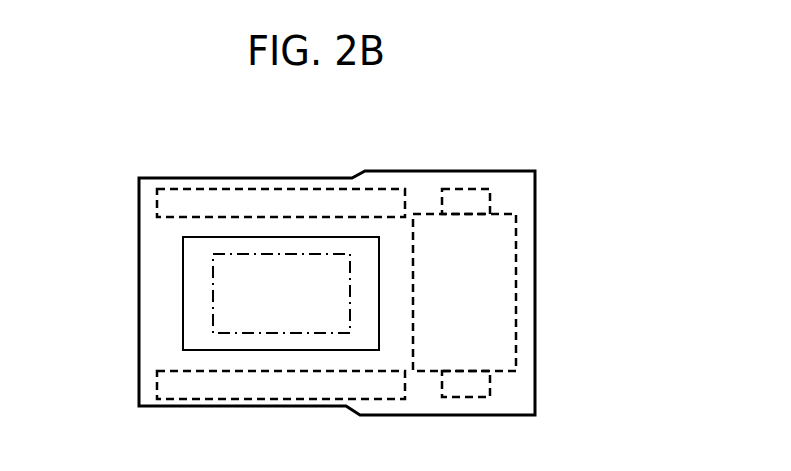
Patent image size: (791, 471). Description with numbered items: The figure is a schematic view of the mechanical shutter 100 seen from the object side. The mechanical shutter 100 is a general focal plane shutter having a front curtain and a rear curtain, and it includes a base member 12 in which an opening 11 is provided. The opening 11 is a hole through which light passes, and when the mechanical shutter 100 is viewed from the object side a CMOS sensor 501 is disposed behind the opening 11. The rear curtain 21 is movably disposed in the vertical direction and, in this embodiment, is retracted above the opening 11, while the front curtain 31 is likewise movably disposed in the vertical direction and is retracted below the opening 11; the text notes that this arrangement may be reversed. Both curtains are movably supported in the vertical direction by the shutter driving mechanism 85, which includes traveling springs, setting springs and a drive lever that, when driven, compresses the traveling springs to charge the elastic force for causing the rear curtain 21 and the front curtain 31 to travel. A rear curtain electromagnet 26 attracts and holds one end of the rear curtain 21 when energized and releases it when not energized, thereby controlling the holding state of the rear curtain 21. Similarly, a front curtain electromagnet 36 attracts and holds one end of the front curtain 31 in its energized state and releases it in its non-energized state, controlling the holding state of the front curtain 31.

The mechanical shutter 100 is at (240, 153).
The base member 12 is at (138, 231).
The rear curtain 21 is at (157, 207).
The front curtain 31 is at (157, 387).
The opening 11 is at (183, 263).
The CMOS sensor 501 is at (213, 304).
The rear curtain electromagnet 26 is at (481, 204).
The shutter driving mechanism 85 is at (516, 295).
The front curtain electromagnet 36 is at (475, 388).